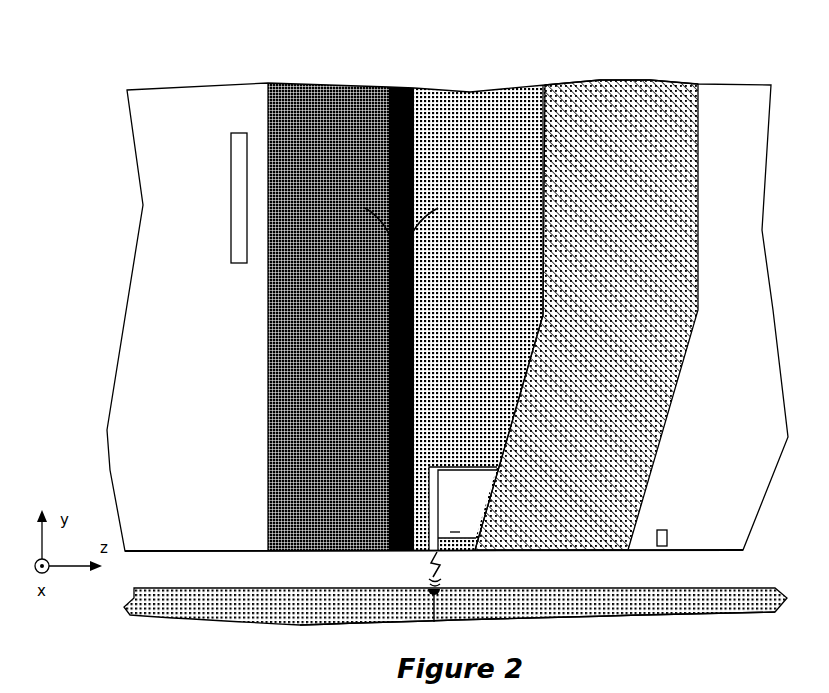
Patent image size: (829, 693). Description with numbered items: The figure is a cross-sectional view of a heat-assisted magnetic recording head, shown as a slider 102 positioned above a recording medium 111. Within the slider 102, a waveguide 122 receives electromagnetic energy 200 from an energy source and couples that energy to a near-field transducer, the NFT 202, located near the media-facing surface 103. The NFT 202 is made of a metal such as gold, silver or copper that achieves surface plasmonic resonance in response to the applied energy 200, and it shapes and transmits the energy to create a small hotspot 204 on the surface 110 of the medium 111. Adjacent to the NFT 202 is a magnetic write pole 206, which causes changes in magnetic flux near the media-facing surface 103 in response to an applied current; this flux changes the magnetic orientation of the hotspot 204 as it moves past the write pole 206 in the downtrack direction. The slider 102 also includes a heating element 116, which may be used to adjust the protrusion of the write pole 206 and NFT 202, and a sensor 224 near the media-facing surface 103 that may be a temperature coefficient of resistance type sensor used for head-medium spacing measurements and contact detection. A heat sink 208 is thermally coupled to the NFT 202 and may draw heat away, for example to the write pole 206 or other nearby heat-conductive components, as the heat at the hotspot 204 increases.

The slider 102 is at (166, 57).
The media-facing surface 103 is at (745, 551).
The surface of medium 110 is at (590, 598).
The medium 111 is at (612, 602).
The heating element 116 is at (231, 222).
The waveguide 122 is at (275, 58).
The electromagnetic energy 200 is at (383, 240).
The NFT 202 is at (425, 575).
The hotspot 204 is at (432, 624).
The magnetic write pole 206 is at (632, 79).
The heat sink 208 is at (455, 532).
The sensor 224 is at (665, 530).